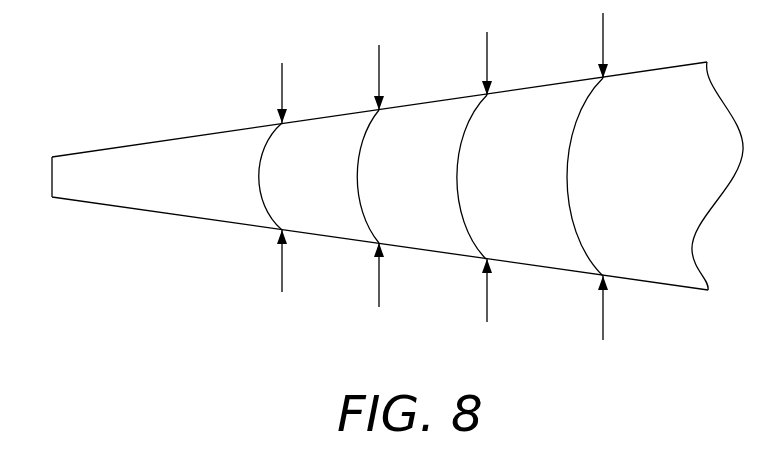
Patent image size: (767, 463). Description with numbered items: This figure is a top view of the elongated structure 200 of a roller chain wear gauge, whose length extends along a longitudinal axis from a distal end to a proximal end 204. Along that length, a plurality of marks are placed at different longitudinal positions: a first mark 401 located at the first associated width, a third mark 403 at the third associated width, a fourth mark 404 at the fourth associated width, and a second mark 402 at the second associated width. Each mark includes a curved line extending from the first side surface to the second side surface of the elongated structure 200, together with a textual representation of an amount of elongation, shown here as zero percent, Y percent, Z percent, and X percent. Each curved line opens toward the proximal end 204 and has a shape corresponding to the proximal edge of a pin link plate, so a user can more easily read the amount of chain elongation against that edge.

The elongated structure 200 is at (116, 100).
The proximal end 204 is at (697, 62).
The first mark 401 is at (260, 177).
The third mark 403 is at (358, 200).
The fourth mark 404 is at (459, 208).
The second mark 402 is at (571, 218).